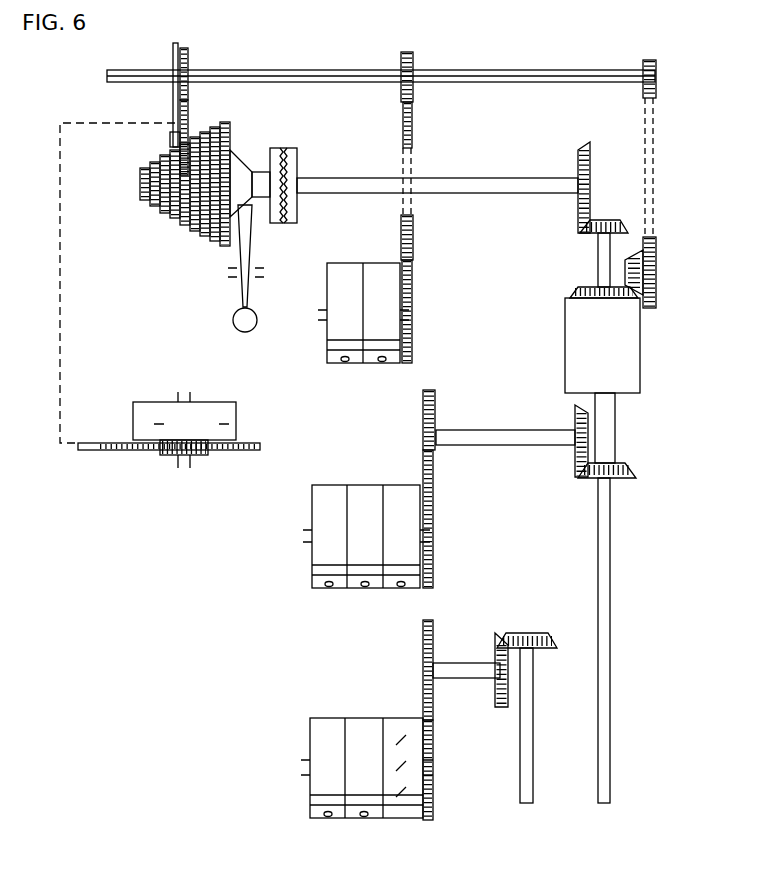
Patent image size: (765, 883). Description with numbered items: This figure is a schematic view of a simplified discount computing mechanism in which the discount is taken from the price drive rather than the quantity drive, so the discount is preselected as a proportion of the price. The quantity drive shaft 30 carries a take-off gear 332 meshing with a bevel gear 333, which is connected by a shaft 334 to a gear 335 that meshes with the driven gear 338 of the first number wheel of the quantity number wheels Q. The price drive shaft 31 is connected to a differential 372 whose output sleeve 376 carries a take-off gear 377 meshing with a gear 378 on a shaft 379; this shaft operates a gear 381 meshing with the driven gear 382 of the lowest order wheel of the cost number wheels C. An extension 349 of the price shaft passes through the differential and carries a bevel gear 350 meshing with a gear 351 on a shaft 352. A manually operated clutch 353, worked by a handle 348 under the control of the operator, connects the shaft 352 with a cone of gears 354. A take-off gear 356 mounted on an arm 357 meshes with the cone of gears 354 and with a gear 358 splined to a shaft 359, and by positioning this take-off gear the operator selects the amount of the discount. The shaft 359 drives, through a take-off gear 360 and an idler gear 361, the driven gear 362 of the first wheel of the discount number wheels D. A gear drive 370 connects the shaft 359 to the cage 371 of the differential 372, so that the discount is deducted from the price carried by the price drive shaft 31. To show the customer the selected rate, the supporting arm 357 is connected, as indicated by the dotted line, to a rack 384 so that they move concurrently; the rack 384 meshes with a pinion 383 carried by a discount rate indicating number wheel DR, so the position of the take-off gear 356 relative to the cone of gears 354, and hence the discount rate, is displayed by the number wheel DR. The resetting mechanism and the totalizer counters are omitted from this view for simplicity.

The quantity drive shaft 30 is at (533, 758).
The price drive shaft 31 is at (610, 748).
The take-off gear 332 is at (541, 633).
The bevel gear 333 is at (495, 705).
The shaft 334 is at (453, 663).
The gear 335 is at (423, 641).
The driven gear 338 is at (433, 800).
The handle 348 is at (241, 294).
The extension of shaft 31 349 is at (598, 262).
The bevel gear 350 is at (610, 220).
The gear 351 is at (586, 145).
The shaft 352 is at (492, 167).
The manually operated clutch 353 is at (291, 148).
The cone of gears 354 is at (145, 207).
The take-off gear 356 is at (189, 118).
The arm 357 is at (173, 46).
The gear 358 is at (190, 60).
The shaft 359 is at (318, 60).
The take-off gear 360 is at (413, 56).
The idler gear 361 is at (415, 236).
The driven gear 362 is at (413, 290).
The gear drive 370 is at (657, 63).
The cage 371 is at (640, 340).
The differential 372 is at (565, 312).
The output sleeve 376 is at (617, 440).
The take-off gear 377 is at (638, 476).
The gear 378 is at (575, 415).
The shaft 379 is at (487, 420).
The gear 381 is at (436, 402).
The driven gear 382 is at (433, 526).
The pinion 383 is at (205, 456).
The rack 384 is at (260, 446).
The discount number wheels D is at (352, 365).
The cost number wheels C is at (350, 590).
The quantity number wheels Q is at (355, 818).
The discount rate indicating number wheel DR is at (237, 414).